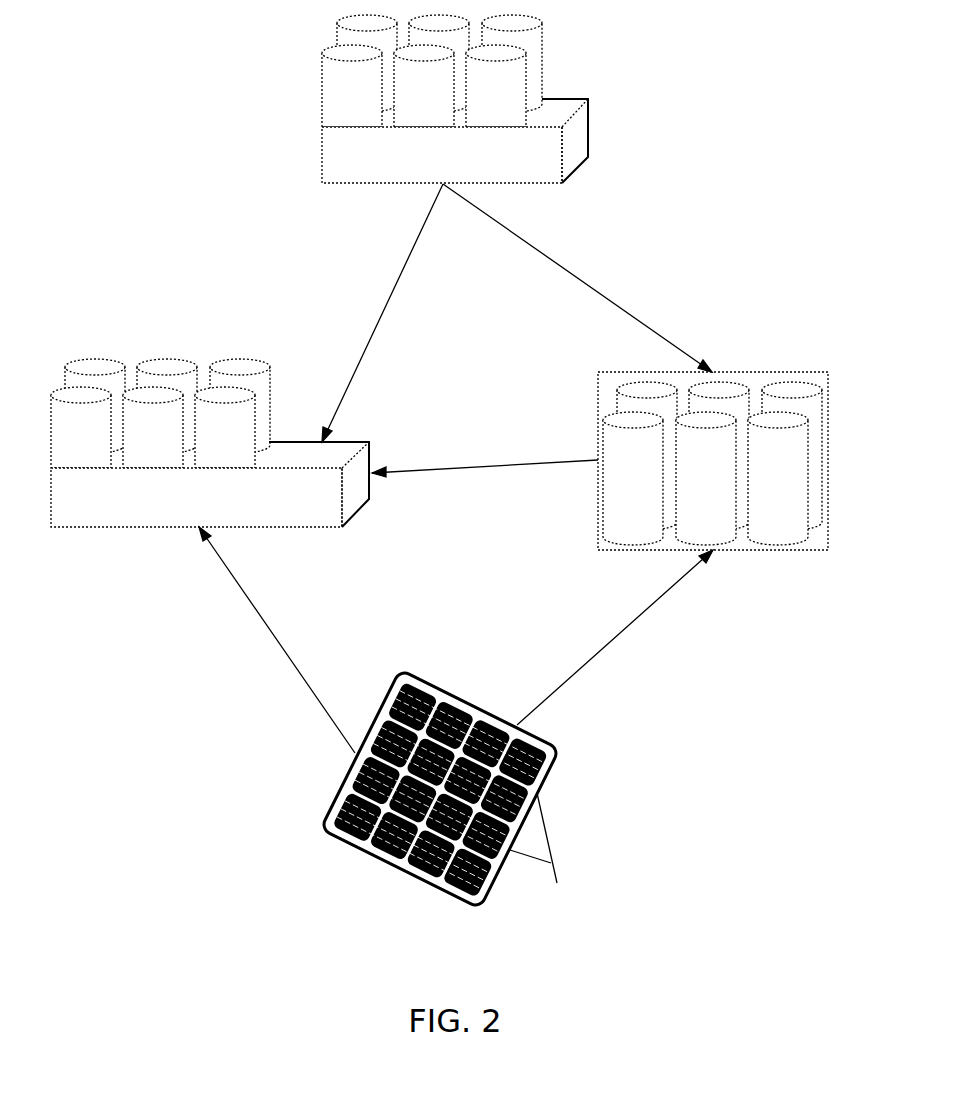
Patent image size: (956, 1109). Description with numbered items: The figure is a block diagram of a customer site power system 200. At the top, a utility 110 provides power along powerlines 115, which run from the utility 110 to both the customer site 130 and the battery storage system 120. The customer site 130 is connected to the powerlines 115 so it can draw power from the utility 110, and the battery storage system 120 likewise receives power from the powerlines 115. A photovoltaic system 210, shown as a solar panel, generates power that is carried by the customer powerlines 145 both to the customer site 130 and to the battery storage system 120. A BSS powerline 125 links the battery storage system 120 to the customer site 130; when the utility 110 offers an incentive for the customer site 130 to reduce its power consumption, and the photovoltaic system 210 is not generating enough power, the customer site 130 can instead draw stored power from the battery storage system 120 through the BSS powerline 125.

The customer site power system 200 is at (193, 184).
The utility 110 is at (589, 118).
The powerlines 115 is at (499, 227).
The battery storage system 120 is at (733, 550).
The BSS powerline 125 is at (498, 468).
The customer site 130 is at (155, 527).
The customer powerlines 145 is at (557, 693).
The photovoltaic system 210 is at (345, 778).